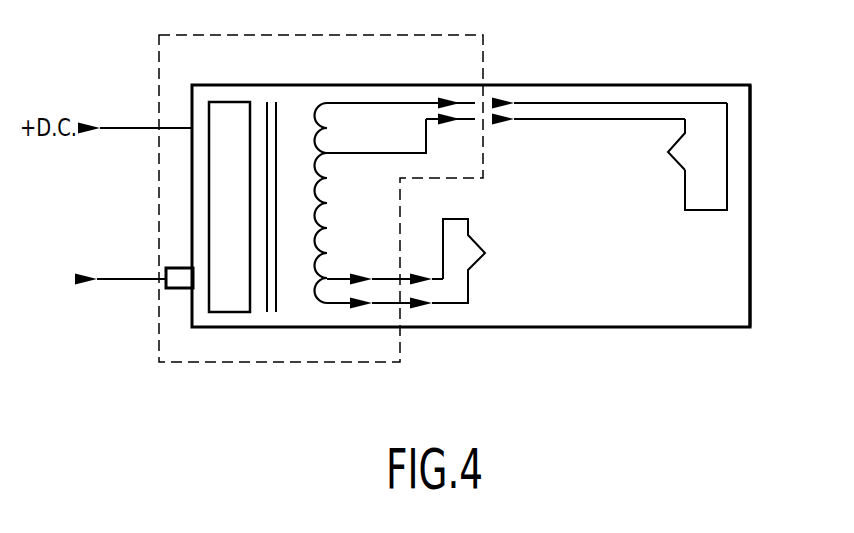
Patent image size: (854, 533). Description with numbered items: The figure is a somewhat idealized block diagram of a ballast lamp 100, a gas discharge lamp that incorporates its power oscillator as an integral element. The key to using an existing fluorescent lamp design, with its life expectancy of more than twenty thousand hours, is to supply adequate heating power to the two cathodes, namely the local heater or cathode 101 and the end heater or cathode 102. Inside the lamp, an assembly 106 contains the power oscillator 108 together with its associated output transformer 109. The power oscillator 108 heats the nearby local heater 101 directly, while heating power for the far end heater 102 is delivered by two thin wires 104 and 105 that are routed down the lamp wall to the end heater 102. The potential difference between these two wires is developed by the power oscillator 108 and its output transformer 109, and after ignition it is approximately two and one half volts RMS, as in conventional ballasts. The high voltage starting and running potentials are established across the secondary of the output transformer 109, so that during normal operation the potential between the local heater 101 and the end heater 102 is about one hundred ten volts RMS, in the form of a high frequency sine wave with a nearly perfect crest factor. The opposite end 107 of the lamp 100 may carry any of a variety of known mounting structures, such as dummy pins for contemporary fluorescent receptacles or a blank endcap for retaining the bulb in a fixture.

The ballast lamp 100 is at (620, 327).
The local heater or cathode 101 is at (476, 241).
The end heater or cathode 102 is at (680, 167).
The thin wire 104 is at (585, 119).
The thin wire 105 is at (648, 103).
The assembly 106 is at (487, 53).
The end of lamp 107 is at (752, 227).
The power oscillator 108 is at (215, 102).
The output transformer 109 is at (275, 102).